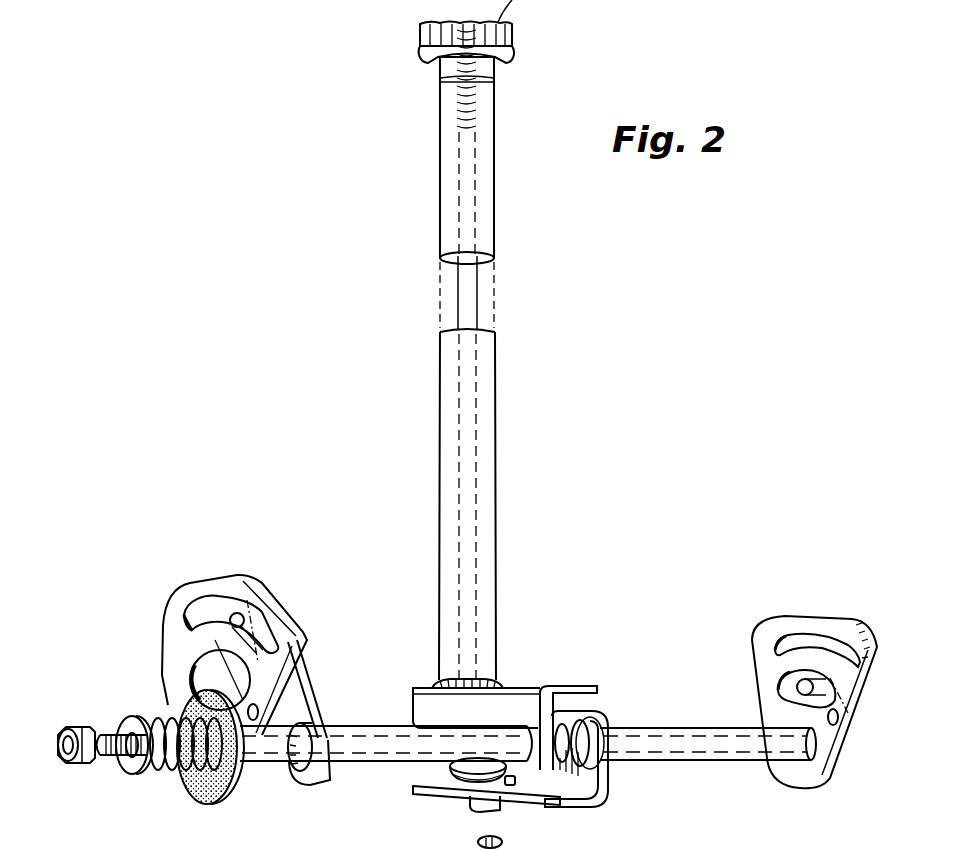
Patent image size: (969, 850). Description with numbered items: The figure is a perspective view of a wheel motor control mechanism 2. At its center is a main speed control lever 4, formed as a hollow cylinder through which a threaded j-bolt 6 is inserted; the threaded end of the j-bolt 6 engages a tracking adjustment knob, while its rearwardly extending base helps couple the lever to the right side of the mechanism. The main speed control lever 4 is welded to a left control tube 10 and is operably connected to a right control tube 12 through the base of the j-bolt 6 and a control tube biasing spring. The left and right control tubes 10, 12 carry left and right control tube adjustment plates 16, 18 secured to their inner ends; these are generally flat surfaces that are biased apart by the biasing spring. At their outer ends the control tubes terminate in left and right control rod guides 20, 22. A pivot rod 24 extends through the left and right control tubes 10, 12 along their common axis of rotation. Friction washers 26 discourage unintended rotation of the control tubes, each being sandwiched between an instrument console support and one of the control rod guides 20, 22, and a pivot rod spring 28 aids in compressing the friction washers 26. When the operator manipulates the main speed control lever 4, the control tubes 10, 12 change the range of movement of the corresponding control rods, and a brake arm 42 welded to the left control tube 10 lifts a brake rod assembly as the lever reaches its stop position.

The wheel motor control mechanism 2 is at (384, 116).
The main speed control lever 4 is at (495, 430).
The threaded j-bolt 6 is at (478, 810).
The left control tube 10 is at (377, 725).
The right control tube 12 is at (667, 737).
The left control tube adjustment plate 16 is at (560, 686).
The right control tube adjustment plate 18 is at (583, 805).
The left control rod guide 20 is at (193, 580).
The right control rod guide 22 is at (811, 615).
The pivot rod 24 is at (122, 766).
The friction washers 26 is at (192, 806).
The pivot rod spring 28 is at (137, 720).
The brake arm 42 is at (300, 692).